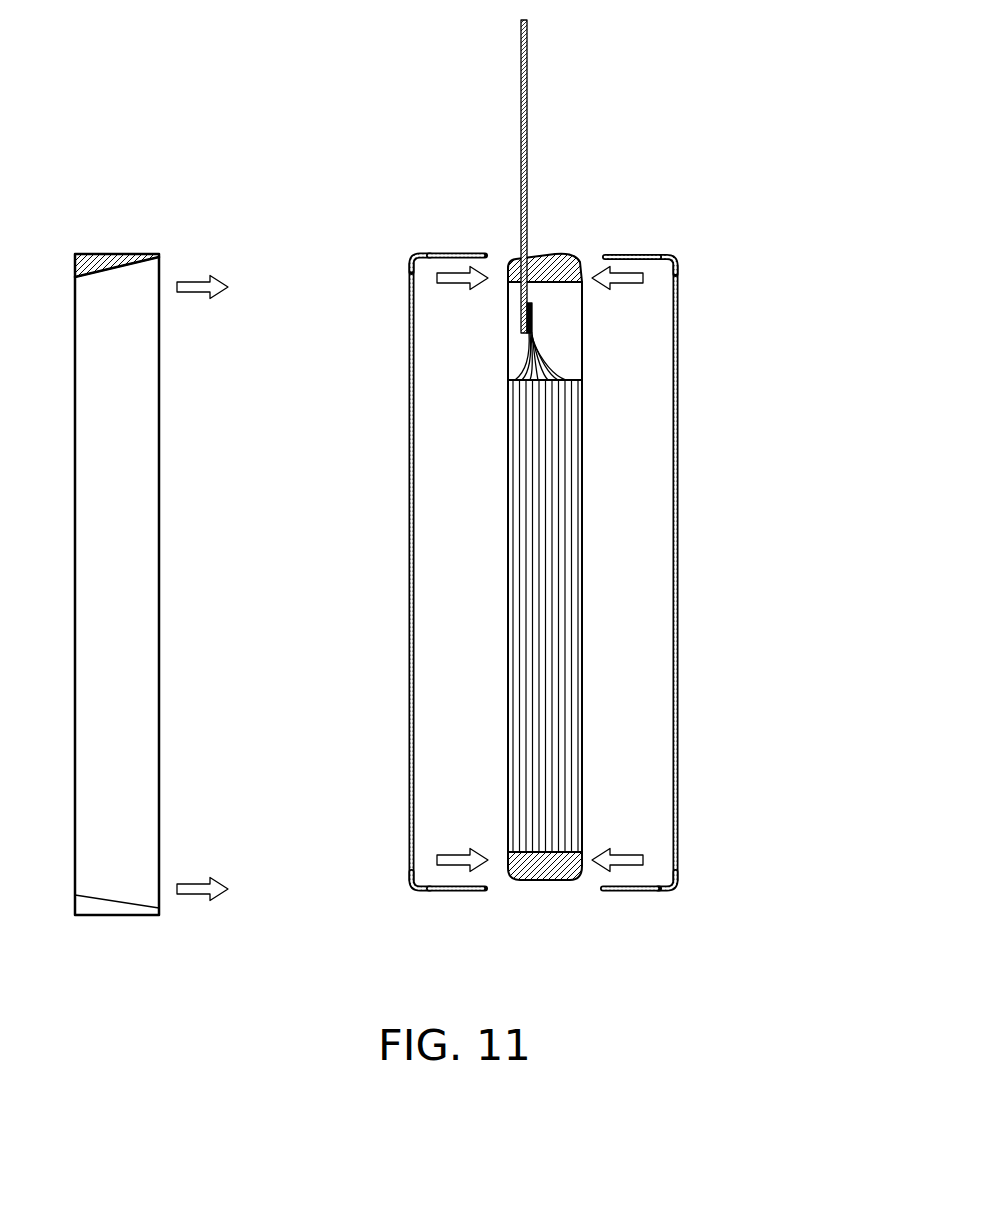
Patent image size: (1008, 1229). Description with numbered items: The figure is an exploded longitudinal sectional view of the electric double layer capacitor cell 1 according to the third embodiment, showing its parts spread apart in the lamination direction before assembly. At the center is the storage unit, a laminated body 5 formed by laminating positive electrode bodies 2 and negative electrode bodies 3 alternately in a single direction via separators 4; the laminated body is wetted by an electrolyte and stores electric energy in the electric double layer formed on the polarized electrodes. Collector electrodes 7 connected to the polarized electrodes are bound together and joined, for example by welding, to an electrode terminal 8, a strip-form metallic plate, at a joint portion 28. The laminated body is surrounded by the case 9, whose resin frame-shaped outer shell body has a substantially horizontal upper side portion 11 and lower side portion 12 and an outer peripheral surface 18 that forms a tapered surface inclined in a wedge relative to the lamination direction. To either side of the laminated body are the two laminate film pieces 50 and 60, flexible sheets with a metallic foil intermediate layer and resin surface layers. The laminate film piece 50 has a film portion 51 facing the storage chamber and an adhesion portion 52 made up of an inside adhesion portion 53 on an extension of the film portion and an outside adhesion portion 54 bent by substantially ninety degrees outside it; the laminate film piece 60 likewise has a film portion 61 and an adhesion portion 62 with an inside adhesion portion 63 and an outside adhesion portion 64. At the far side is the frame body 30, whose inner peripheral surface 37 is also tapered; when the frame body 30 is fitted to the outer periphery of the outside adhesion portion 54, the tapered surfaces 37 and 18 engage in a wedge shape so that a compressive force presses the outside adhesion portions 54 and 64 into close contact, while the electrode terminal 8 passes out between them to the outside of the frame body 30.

The electric double layer capacitor cell 1 is at (576, 181).
The positive electrode body 2 is at (507, 643).
The negative electrode body 3 is at (520, 685).
The separator 4 is at (515, 725).
The laminated body 5 is at (447, 616).
The collector electrode 7 is at (545, 352).
The electrode terminal 8 is at (520, 95).
The case 9 is at (704, 684).
The upper side portion 11 is at (572, 268).
The lower side portion 12 is at (548, 878).
The outer peripheral surface 18 is at (566, 256).
The joint portion 28 is at (535, 315).
The frame body 30 is at (144, 546).
The inner peripheral surface 37 is at (100, 277).
The laminate film piece 50 is at (361, 567).
The film portion 51 is at (407, 793).
The adhesion portion 52 is at (373, 567).
The inside adhesion portion 53 is at (407, 285).
The outside adhesion portion 54 is at (445, 252).
The laminate film piece 60 is at (733, 554).
The film portion 61 is at (680, 780).
The adhesion portion 62 is at (708, 554).
The inside adhesion portion 63 is at (682, 270).
The outside adhesion portion 64 is at (646, 254).